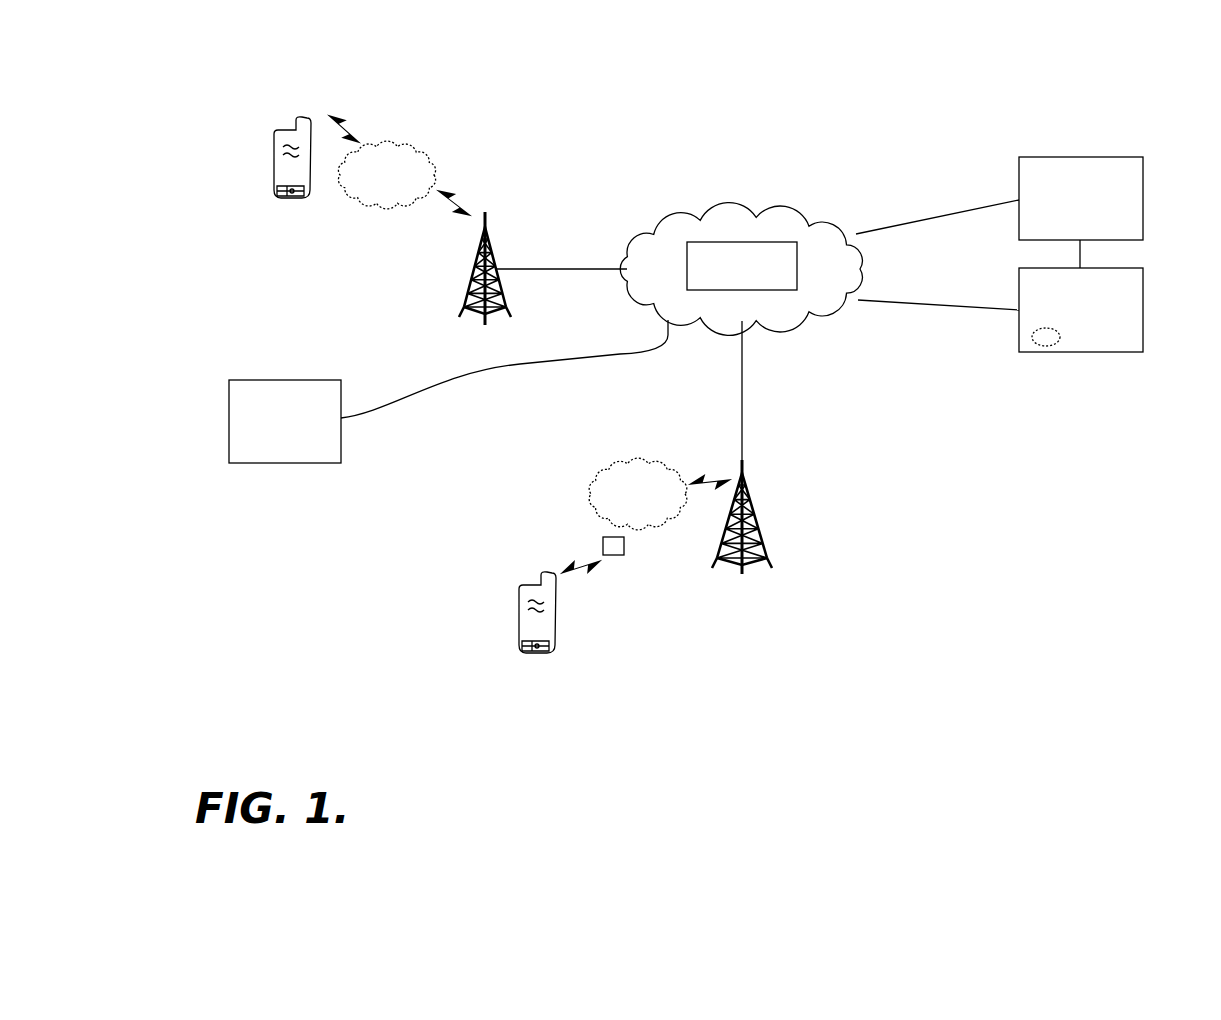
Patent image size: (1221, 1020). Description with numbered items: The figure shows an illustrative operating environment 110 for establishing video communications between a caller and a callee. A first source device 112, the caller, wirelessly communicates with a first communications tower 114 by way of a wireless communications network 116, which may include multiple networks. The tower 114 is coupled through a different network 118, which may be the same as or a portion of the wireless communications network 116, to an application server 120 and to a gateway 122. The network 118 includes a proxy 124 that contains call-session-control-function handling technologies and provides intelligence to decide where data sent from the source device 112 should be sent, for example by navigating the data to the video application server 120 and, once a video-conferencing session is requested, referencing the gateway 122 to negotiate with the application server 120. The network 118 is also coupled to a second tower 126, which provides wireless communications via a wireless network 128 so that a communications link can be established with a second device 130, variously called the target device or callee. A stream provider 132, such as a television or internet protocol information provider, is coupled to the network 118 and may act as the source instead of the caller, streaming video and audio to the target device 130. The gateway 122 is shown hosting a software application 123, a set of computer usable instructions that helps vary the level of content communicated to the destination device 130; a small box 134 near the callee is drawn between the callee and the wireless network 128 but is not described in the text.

The operating environment 110 is at (190, 110).
The first source device 112 is at (272, 178).
The first communications tower 114 is at (498, 310).
The wireless communications network 116 is at (435, 168).
The network 118 is at (820, 313).
The application server 120 is at (1143, 200).
The gateway 122 is at (1080, 352).
The software application 123 is at (1046, 346).
The proxy 124 is at (742, 214).
The second tower 126 is at (753, 560).
The wireless network 128 is at (589, 492).
The second device 130 is at (518, 622).
The stream provider 132 is at (305, 463).
The access point 134 is at (613, 555).